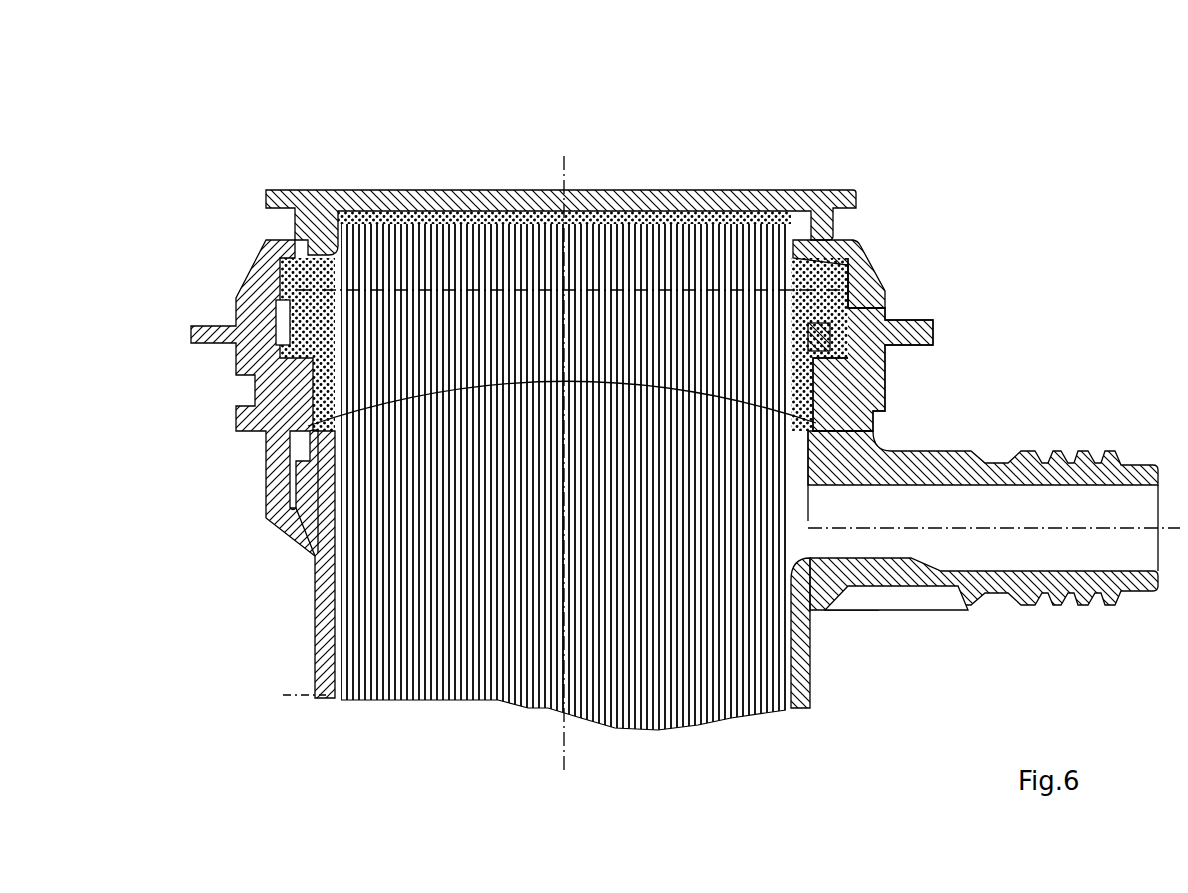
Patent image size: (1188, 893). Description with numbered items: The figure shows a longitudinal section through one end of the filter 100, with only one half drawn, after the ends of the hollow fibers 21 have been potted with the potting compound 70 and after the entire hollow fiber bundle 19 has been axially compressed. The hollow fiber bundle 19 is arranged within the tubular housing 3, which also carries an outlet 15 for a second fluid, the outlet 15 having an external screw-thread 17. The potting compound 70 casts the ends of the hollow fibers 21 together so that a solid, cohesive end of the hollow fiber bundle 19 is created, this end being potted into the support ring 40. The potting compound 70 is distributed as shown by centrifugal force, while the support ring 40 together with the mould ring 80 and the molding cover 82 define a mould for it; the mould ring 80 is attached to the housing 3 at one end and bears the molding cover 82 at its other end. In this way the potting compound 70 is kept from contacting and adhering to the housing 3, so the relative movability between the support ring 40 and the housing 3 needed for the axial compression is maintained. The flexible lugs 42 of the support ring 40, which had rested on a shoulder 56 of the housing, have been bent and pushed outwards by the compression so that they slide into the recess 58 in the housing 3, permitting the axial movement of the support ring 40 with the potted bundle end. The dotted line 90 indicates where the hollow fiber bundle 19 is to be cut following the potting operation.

The filter 100 is at (835, 75).
The molding cover 82 is at (672, 180).
The dotted line 90 is at (803, 280).
The potting compound 70 is at (303, 265).
The mould ring 80 is at (862, 278).
The support ring 40 is at (263, 368).
The flexible lugs 42 is at (293, 450).
The recess 58 is at (283, 498).
The shoulder 56 is at (300, 475).
The hollow fibers 21 is at (440, 690).
The hollow fiber bundle 19 is at (370, 703).
The tubular housing 3 is at (800, 700).
The outlet 15 is at (912, 565).
The external screw-thread 17 is at (963, 600).